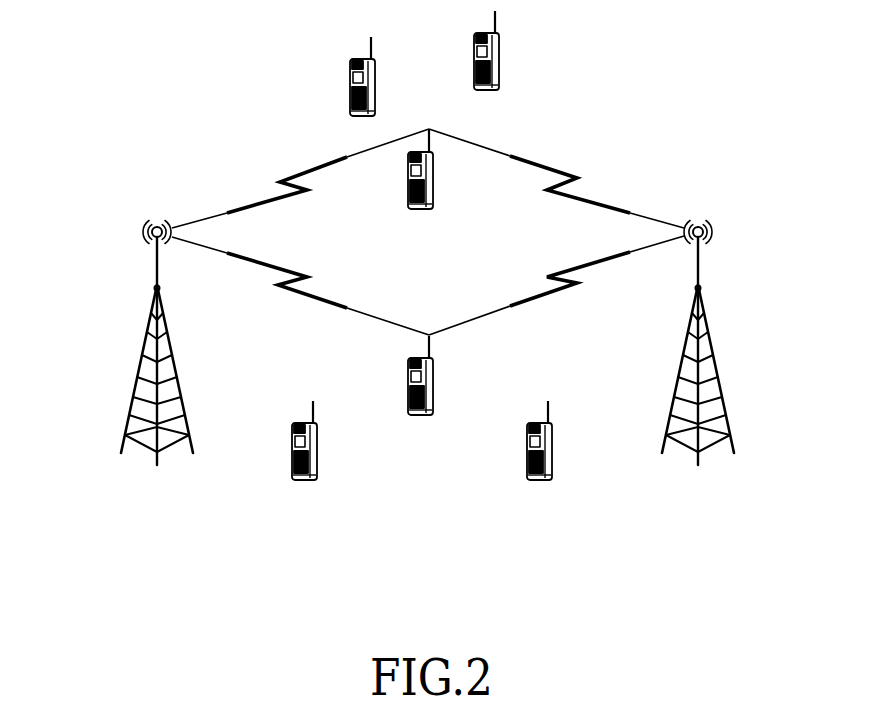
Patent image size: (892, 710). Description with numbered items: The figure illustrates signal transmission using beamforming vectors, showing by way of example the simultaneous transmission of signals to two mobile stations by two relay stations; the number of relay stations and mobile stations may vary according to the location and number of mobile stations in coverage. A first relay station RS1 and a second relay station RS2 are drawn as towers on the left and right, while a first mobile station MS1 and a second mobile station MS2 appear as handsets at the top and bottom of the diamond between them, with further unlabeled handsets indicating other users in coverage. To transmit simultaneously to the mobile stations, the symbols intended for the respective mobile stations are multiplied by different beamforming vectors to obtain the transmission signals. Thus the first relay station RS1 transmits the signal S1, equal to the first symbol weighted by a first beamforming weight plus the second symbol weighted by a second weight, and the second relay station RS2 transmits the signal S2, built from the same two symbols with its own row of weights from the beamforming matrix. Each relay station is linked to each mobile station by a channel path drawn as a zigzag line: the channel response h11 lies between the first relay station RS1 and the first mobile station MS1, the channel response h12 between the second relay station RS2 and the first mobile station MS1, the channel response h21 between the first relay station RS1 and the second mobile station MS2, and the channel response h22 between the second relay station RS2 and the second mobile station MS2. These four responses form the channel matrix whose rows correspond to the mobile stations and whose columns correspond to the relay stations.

The first relay station RS1 is at (157, 359).
The second relay station RS2 is at (698, 359).
The first mobile station MS1 is at (425, 183).
The second mobile station MS2 is at (426, 389).
The channel response between first RS and first MS h11 is at (300, 178).
The channel response between second RS and first MS h12 is at (556, 178).
The channel response between first RS and second MS h21 is at (300, 281).
The channel response between second RS and second MS h22 is at (556, 281).
The transmission signal of first RS S1 is at (154, 186).
The transmission signal of second RS S2 is at (695, 186).